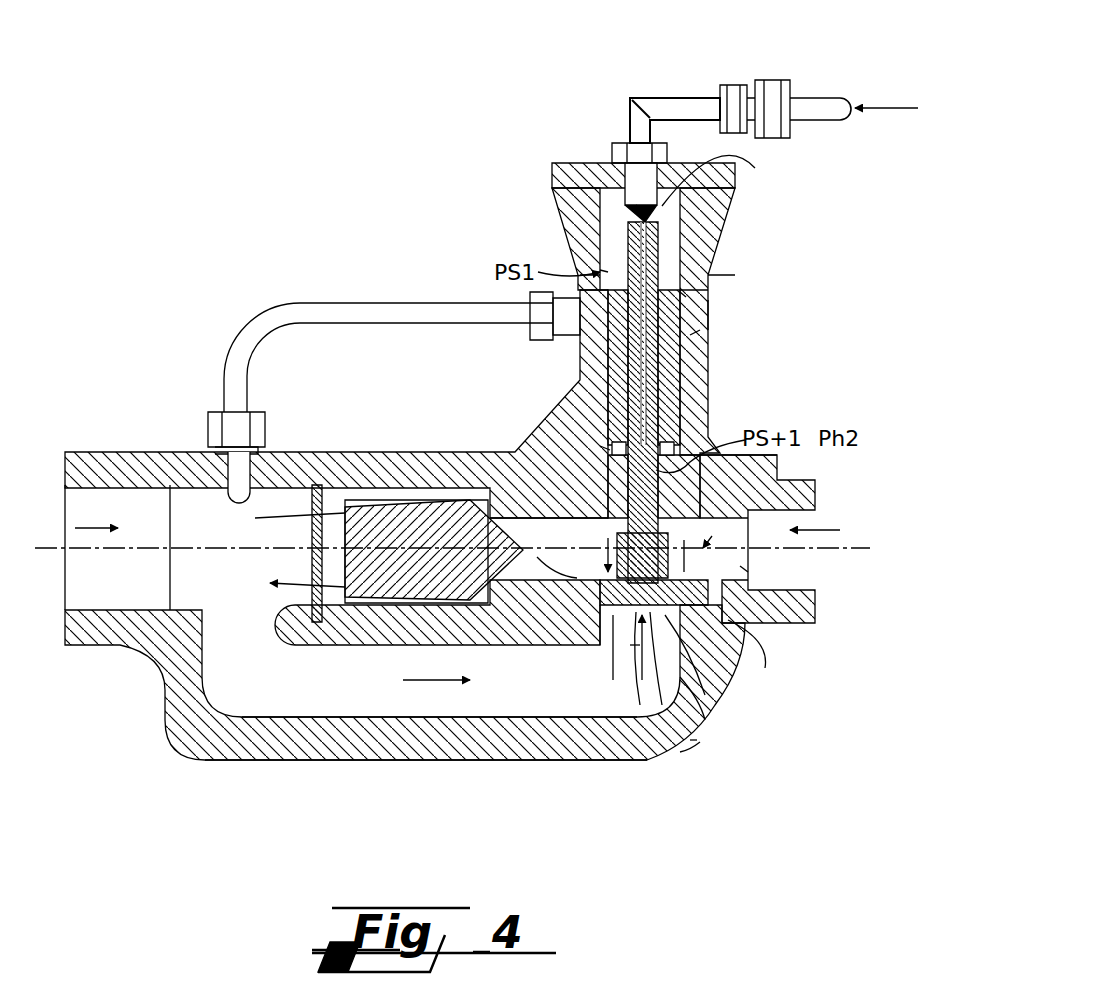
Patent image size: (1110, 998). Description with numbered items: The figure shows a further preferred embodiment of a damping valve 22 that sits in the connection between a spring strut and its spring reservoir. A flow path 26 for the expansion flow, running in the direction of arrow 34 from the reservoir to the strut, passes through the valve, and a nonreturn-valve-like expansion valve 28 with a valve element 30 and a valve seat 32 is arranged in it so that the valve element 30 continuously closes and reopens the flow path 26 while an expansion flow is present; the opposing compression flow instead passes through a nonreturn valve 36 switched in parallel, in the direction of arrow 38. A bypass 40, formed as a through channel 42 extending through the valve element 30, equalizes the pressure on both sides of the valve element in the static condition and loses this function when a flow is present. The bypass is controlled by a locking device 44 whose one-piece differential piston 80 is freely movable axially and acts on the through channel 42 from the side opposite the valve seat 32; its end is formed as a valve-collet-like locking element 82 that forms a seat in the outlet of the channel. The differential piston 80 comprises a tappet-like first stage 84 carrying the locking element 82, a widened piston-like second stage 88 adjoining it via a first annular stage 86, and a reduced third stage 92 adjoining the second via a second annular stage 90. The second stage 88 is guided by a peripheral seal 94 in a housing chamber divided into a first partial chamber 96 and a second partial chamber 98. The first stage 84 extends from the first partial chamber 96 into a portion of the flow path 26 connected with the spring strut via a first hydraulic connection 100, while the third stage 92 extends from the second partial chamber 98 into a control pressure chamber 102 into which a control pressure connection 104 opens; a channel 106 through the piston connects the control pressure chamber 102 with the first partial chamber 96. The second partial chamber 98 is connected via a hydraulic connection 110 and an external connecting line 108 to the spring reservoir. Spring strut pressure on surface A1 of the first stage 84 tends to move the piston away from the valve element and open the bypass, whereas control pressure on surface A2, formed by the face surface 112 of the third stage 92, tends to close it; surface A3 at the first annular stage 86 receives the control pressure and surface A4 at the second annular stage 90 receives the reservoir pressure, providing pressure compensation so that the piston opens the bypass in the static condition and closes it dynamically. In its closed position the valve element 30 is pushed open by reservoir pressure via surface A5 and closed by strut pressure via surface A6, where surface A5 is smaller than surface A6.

The damping valve 22 is at (656, 787).
The flow path 26 is at (495, 696).
The expansion valve 28 is at (497, 632).
The valve element 30 is at (526, 606).
The valve seat 32 is at (698, 722).
The arrow 34 is at (437, 758).
The nonreturn valve 36 is at (485, 498).
The arrow 38 is at (283, 576).
The bypass 40 is at (700, 744).
The through channel 42 is at (644, 680).
The locking device 44 is at (715, 336).
The differential piston 80 is at (658, 360).
The locking element 82 is at (600, 612).
The first stage 84 is at (600, 456).
The first annular stage 86 is at (712, 445).
The second stage 88 is at (620, 355).
The second annular stage 90 is at (708, 292).
The third stage 92 is at (706, 250).
The peripheral seal 94 is at (685, 416).
The first partial chamber 96 is at (770, 481).
The second partial chamber 98 is at (686, 296).
The first hydraulic connection 100 is at (800, 586).
The control pressure chamber 102 is at (647, 146).
The control pressure connection 104 is at (660, 146).
The channel 106 is at (700, 332).
The external connecting line 108 is at (330, 312).
The hydraulic connection 110 is at (60, 488).
The face surface 112 is at (728, 188).
The surface A1 is at (697, 740).
The surface A2 is at (640, 206).
The surface A3 is at (608, 450).
The surface A4 is at (605, 268).
The surface A5 is at (636, 646).
The surface A6 is at (740, 568).